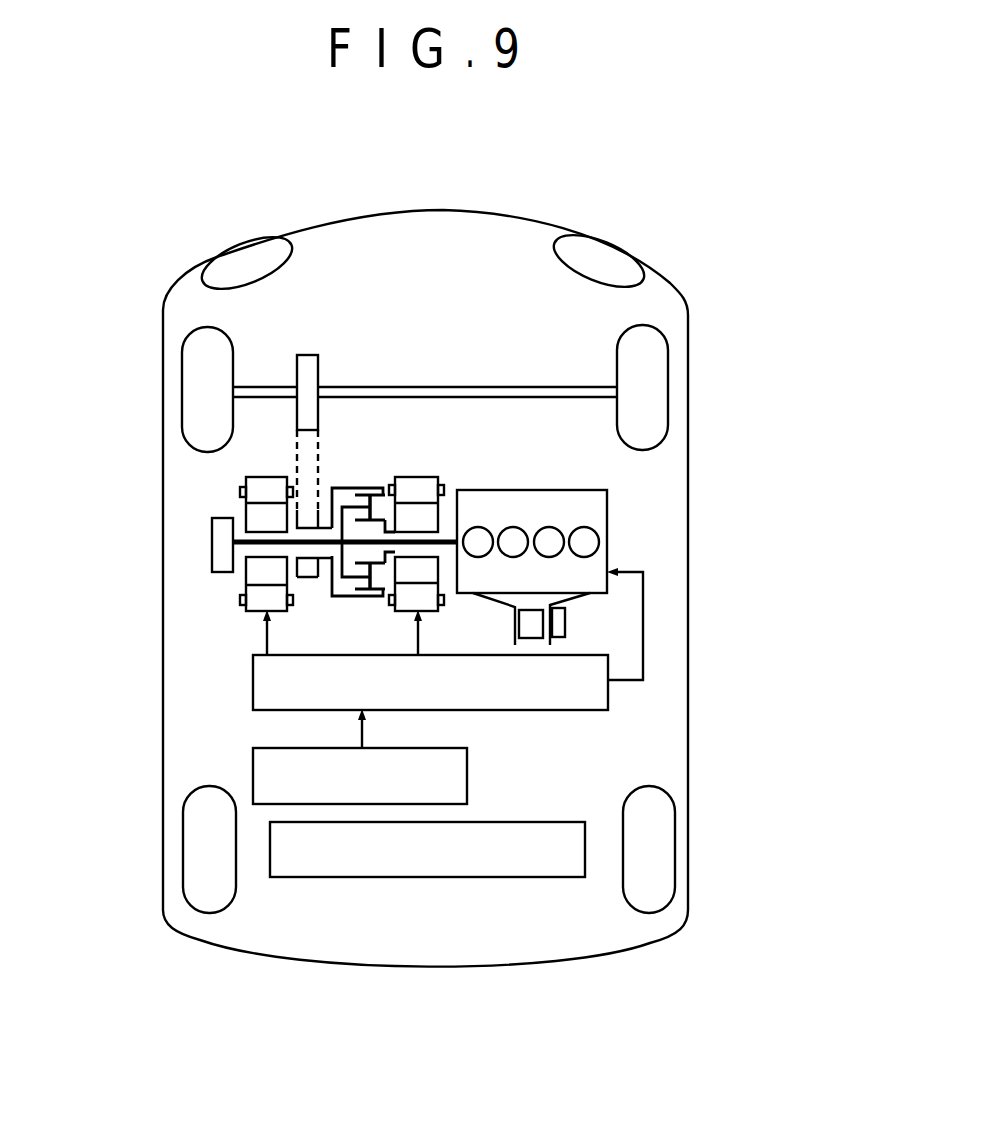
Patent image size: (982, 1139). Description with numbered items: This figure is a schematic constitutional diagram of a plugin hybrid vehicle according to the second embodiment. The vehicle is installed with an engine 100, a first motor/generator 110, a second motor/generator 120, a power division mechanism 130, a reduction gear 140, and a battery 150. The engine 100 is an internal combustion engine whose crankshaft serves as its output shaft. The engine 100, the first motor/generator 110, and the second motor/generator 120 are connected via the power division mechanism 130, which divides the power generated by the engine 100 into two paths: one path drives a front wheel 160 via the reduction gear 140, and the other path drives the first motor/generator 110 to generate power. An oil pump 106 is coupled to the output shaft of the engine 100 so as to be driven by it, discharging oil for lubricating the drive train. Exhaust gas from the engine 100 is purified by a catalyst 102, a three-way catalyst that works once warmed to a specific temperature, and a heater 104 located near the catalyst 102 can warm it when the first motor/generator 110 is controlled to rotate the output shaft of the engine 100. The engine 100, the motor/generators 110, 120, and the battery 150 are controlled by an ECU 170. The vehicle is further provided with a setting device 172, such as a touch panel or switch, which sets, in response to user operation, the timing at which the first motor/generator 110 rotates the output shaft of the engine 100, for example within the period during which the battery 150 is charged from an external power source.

The engine 100 is at (537, 490).
The catalyst 102 is at (540, 609).
The heater 104 is at (565, 624).
The oil pump 106 is at (212, 558).
The first motor/generator 110 is at (413, 478).
The second motor/generator 120 is at (247, 487).
The power division mechanism 130 is at (357, 487).
The reduction gear 140 is at (305, 338).
The battery 150 is at (427, 877).
The front wheel 160 is at (183, 390).
The ECU 170 is at (253, 672).
The setting device 172 is at (253, 780).